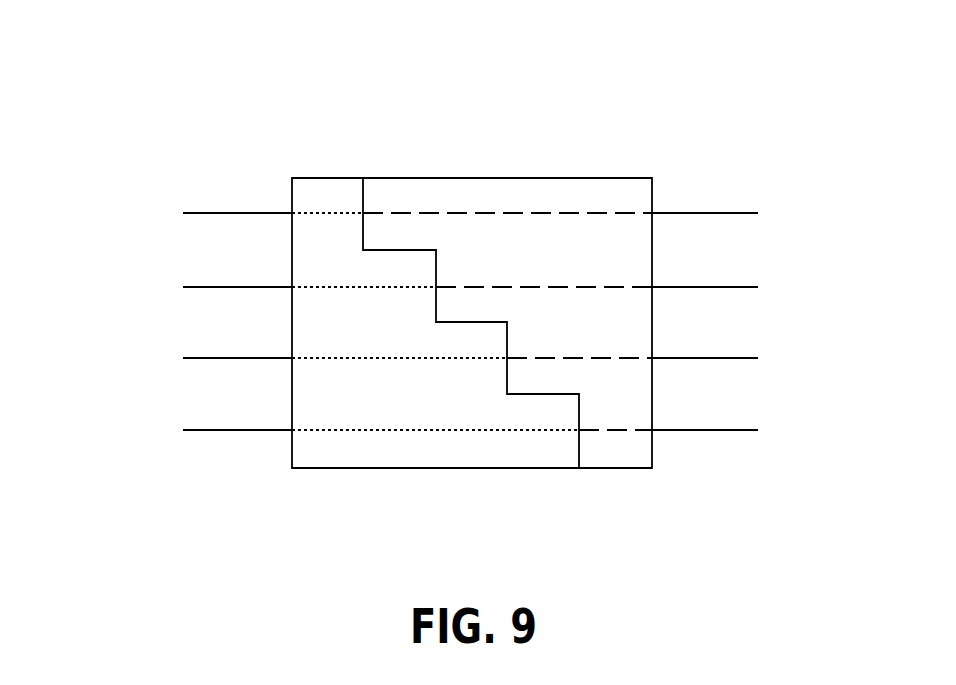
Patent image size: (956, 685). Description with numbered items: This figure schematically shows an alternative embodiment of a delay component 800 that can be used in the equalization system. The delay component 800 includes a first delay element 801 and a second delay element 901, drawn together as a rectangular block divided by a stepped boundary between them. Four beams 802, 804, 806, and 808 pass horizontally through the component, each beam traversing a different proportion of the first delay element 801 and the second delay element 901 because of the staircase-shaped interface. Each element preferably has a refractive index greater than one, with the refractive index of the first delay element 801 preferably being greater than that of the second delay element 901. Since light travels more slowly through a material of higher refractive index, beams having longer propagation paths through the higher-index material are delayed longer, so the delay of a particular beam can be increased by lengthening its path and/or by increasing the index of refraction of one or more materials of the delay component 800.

The delay component 800 is at (155, 107).
The first delay element 801 is at (400, 468).
The beam 802 is at (219, 213).
The beam 804 is at (219, 287).
The beam 806 is at (219, 358).
The beam 808 is at (219, 430).
The second delay element 901 is at (488, 178).